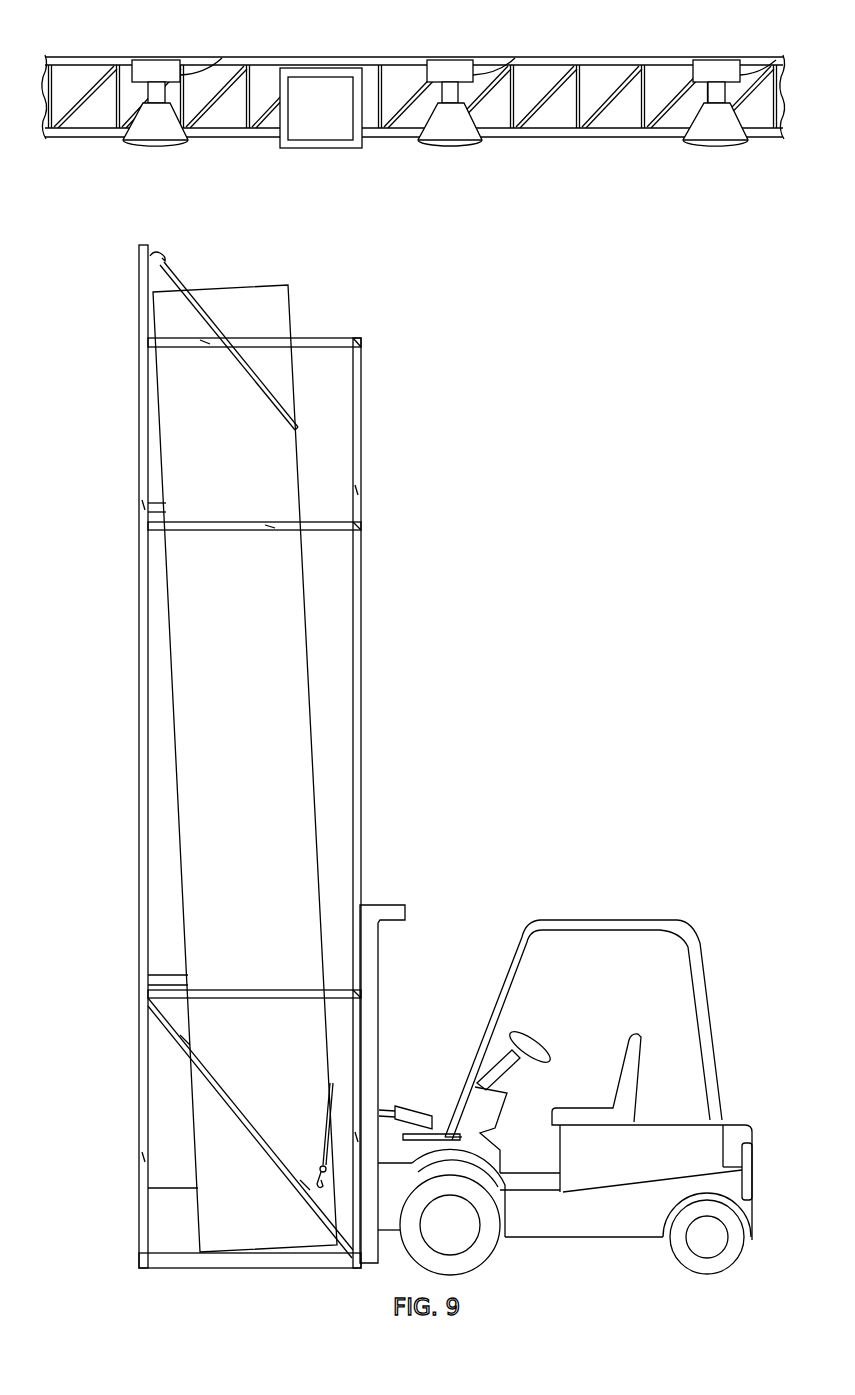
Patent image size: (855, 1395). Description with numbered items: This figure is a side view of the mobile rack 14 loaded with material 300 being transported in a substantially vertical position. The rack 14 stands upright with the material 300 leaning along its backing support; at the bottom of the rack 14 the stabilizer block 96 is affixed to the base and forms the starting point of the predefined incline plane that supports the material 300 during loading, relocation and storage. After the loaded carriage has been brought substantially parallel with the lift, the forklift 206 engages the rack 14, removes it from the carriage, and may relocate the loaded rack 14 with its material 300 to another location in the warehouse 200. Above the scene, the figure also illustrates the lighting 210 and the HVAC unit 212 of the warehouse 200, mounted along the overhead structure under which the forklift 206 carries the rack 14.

The rack 14 is at (140, 638).
The stabilizer block 96 is at (175, 1215).
The warehouse 200 is at (413, 665).
The forklift 206 is at (575, 927).
The lighting 210 is at (152, 147).
The HVAC unit 212 is at (328, 147).
The material 300 is at (262, 622).